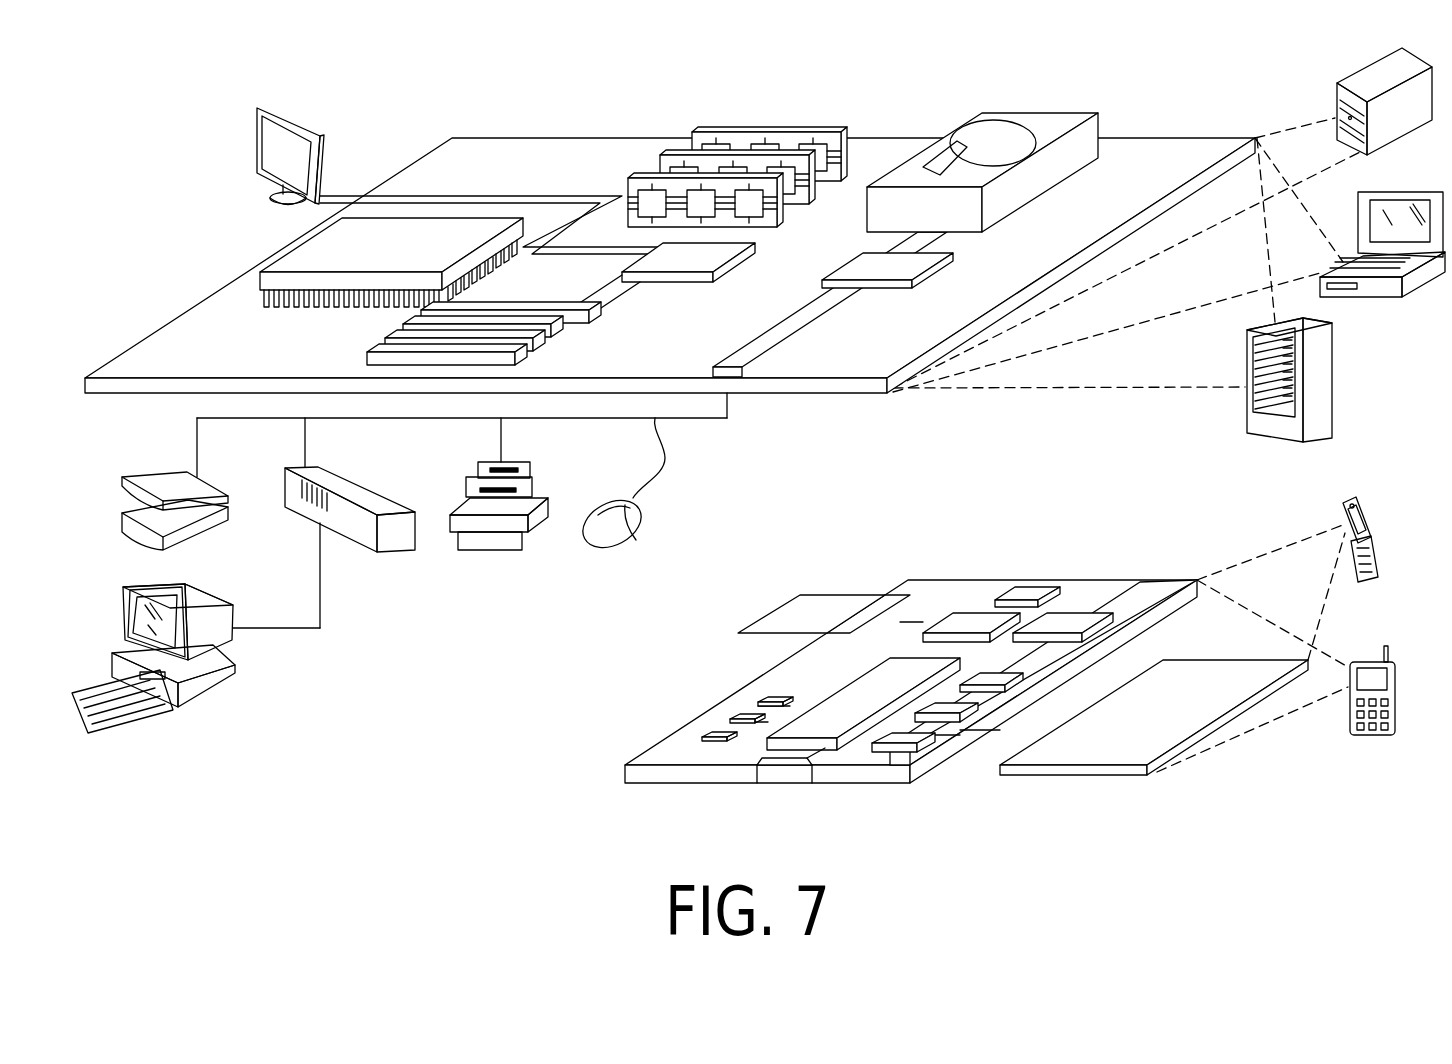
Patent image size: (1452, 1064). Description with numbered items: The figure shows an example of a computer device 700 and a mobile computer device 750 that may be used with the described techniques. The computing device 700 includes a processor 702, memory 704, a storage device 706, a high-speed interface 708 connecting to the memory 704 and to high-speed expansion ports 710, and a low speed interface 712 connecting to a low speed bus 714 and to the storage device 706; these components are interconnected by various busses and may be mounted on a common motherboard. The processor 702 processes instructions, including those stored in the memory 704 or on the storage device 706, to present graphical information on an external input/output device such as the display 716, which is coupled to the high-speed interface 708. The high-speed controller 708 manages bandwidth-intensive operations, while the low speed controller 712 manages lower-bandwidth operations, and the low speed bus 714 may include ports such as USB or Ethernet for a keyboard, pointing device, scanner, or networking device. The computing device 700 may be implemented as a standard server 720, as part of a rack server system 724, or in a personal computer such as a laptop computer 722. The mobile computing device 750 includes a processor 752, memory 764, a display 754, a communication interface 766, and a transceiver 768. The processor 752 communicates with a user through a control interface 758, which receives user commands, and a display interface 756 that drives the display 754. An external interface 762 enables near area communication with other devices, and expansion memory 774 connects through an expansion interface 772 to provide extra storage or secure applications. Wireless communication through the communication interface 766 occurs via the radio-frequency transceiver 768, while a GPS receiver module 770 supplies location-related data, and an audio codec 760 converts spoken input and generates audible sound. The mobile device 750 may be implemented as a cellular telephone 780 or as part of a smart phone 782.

The computing device 700 is at (402, 84).
The processor 702 is at (290, 252).
The memory 704 is at (774, 129).
The storage device 706 is at (1028, 112).
The high-speed interface 708 is at (702, 253).
The high-speed expansion ports 710 is at (398, 334).
The low speed interface 712 is at (856, 264).
The low speed bus 714 is at (735, 364).
The display 716 is at (265, 103).
The standard server 720 is at (1361, 80).
The laptop computer 722 is at (1418, 190).
The rack server system 724 is at (1333, 380).
The mobile computing device 750 is at (578, 793).
The processor 752 is at (828, 711).
The display 754 is at (1196, 677).
The display interface 756 is at (913, 739).
The control interface 758 is at (955, 712).
The audio codec 760 is at (1000, 680).
The external interface 762 is at (785, 768).
The memory 764 is at (735, 717).
The communication interface 766 is at (973, 615).
The transceiver 768 is at (1072, 620).
The GPS receiver module 770 is at (1028, 592).
The expansion interface 772 is at (892, 593).
The expansion memory 774 is at (799, 594).
The cellular telephone 780 is at (1357, 498).
The smart phone 782 is at (1369, 658).